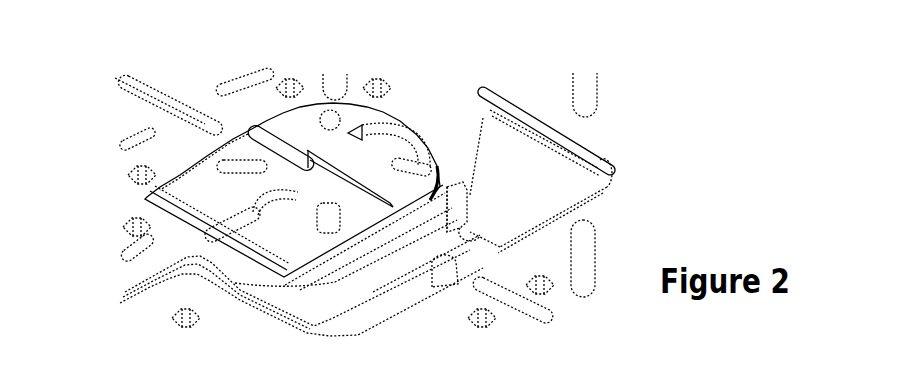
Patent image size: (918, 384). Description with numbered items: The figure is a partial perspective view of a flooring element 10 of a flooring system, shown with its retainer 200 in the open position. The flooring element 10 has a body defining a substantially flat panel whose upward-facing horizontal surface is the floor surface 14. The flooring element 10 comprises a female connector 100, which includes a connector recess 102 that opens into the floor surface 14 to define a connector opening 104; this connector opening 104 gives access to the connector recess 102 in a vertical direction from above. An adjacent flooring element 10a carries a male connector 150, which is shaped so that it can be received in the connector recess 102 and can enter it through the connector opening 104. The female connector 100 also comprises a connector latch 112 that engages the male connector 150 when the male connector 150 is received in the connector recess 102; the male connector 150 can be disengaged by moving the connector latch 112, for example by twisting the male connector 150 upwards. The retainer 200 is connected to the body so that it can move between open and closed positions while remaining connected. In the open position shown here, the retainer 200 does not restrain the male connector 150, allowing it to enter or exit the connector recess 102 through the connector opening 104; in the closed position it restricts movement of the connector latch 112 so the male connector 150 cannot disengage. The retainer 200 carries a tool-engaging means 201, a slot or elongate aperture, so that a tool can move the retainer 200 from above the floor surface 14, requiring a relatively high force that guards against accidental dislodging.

The flooring element 10 is at (203, 83).
The adjacent flooring element 10a is at (622, 224).
The female connector 100 is at (313, 96).
The retainer 200 is at (272, 236).
The tool-engaging means 201 is at (310, 167).
The floor surface 14 is at (501, 130).
The connector recess 102 is at (480, 203).
The connector opening 104 is at (461, 180).
The connector latch 112 is at (392, 248).
The male connector 150 is at (433, 258).